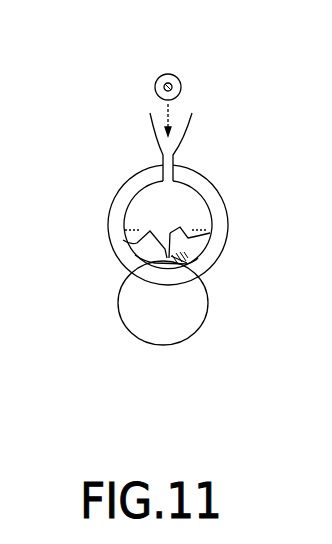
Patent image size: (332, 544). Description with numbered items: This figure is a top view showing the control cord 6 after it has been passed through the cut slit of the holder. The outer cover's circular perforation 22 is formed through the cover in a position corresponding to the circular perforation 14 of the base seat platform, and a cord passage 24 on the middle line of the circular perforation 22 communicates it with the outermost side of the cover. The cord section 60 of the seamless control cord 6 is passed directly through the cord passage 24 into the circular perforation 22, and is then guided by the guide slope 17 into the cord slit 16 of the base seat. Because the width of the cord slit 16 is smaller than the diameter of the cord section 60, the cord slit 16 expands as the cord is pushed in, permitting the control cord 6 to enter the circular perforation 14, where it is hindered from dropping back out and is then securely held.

The seamless control cord 6 is at (181, 82).
The cord passage 24 is at (172, 148).
The circular perforation 22 is at (177, 208).
The guide slope 17 is at (172, 228).
The cord slit 16 is at (165, 247).
The cord section 60 is at (178, 262).
The circular perforation 14 is at (168, 303).